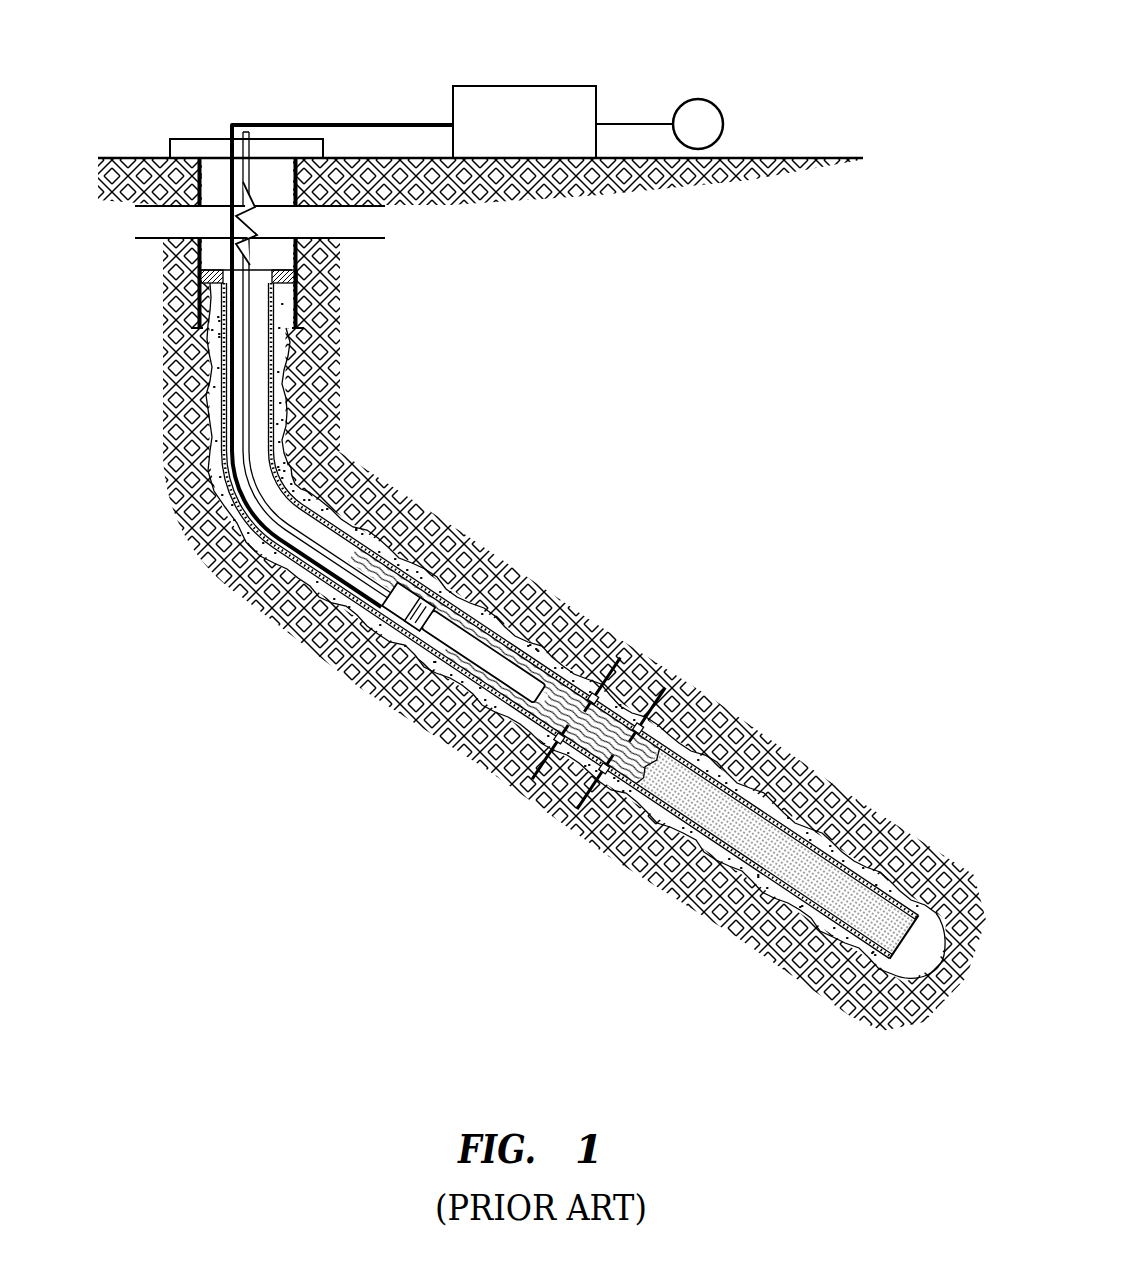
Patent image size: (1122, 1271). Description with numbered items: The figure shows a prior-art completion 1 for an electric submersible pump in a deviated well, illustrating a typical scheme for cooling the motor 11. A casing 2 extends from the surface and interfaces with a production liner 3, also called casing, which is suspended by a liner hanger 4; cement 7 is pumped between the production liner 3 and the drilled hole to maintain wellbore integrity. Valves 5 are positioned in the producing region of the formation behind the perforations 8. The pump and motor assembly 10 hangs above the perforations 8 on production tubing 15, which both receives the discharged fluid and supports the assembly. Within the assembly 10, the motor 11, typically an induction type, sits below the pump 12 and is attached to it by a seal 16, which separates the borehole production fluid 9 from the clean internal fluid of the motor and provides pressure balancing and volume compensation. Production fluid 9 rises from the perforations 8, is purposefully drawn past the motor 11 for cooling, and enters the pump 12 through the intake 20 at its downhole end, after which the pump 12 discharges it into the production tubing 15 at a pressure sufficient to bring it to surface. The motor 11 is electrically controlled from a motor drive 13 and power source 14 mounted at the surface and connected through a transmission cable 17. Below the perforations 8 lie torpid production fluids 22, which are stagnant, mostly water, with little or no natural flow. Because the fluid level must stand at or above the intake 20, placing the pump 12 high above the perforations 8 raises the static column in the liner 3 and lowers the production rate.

The completion 1 is at (140, 188).
The casing 2 is at (295, 285).
The production liner 3 is at (275, 410).
The liner hanger 4 is at (205, 290).
The valves 5 is at (520, 760).
The cement 7 is at (235, 540).
The perforations 8 is at (600, 675).
The production fluid 9 is at (605, 725).
The pump and motor assembly 10 is at (455, 615).
The motor 11 is at (500, 738).
The pump 12 is at (400, 630).
The motor drive 13 is at (550, 86).
The power source 14 is at (698, 99).
The production tubing 15 is at (330, 545).
The seal 16 is at (430, 680).
The transmission cable 17 is at (372, 125).
The intake 20 is at (420, 610).
The torpid production fluids 22 is at (800, 870).